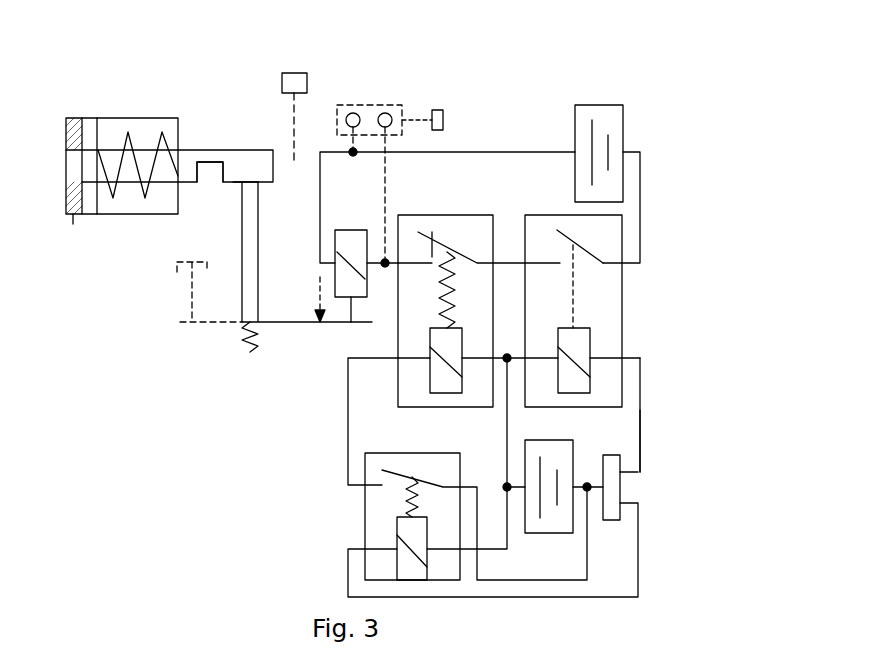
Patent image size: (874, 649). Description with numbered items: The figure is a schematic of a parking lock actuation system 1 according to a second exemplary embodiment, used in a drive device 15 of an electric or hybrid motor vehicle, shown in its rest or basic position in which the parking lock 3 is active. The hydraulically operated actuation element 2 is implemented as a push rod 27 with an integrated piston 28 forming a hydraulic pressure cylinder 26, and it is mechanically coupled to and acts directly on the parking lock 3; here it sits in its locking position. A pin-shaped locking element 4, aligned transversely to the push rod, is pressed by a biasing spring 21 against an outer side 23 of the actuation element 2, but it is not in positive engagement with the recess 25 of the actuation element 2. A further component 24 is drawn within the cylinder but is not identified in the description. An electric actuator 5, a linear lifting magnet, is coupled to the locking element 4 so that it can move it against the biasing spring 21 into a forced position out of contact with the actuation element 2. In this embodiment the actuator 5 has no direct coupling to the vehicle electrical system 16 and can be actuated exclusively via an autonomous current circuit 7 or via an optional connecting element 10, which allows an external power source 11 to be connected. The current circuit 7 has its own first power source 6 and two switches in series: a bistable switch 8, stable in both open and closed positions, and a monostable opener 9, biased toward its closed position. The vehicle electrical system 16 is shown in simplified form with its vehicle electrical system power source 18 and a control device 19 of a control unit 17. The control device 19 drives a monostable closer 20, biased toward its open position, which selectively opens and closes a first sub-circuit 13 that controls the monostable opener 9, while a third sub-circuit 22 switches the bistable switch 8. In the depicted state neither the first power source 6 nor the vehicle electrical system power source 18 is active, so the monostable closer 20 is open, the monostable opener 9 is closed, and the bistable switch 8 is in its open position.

The parking lock actuation system 1 is at (626, 114).
The actuation element 2 is at (169, 127).
The push rod 27 is at (190, 156).
The parking lock 3 is at (295, 82).
The locking element 4 is at (247, 262).
The electric actuator 5 is at (343, 283).
The first power source 6 is at (623, 115).
The current circuit 7 is at (640, 215).
The bistable switch 8 is at (615, 308).
The monostable opener 9 is at (477, 222).
The connecting element 10 is at (365, 110).
The external power source 11 is at (443, 120).
The first sub-circuit 13 is at (347, 428).
The drive device 15 is at (670, 60).
The vehicle electrical system 16 is at (657, 427).
The control unit 17 is at (657, 452).
The vehicle electrical system power source 18 is at (573, 455).
The control device 19 is at (613, 485).
The monostable closer 20 is at (372, 503).
The biasing spring 21 is at (242, 345).
The third sub-circuit 22 is at (640, 365).
The outer side 23 is at (233, 184).
The spring 24 is at (130, 133).
The recess 25 is at (198, 170).
The hydraulic pressure cylinder 26 is at (72, 118).
The piston 28 is at (90, 214).